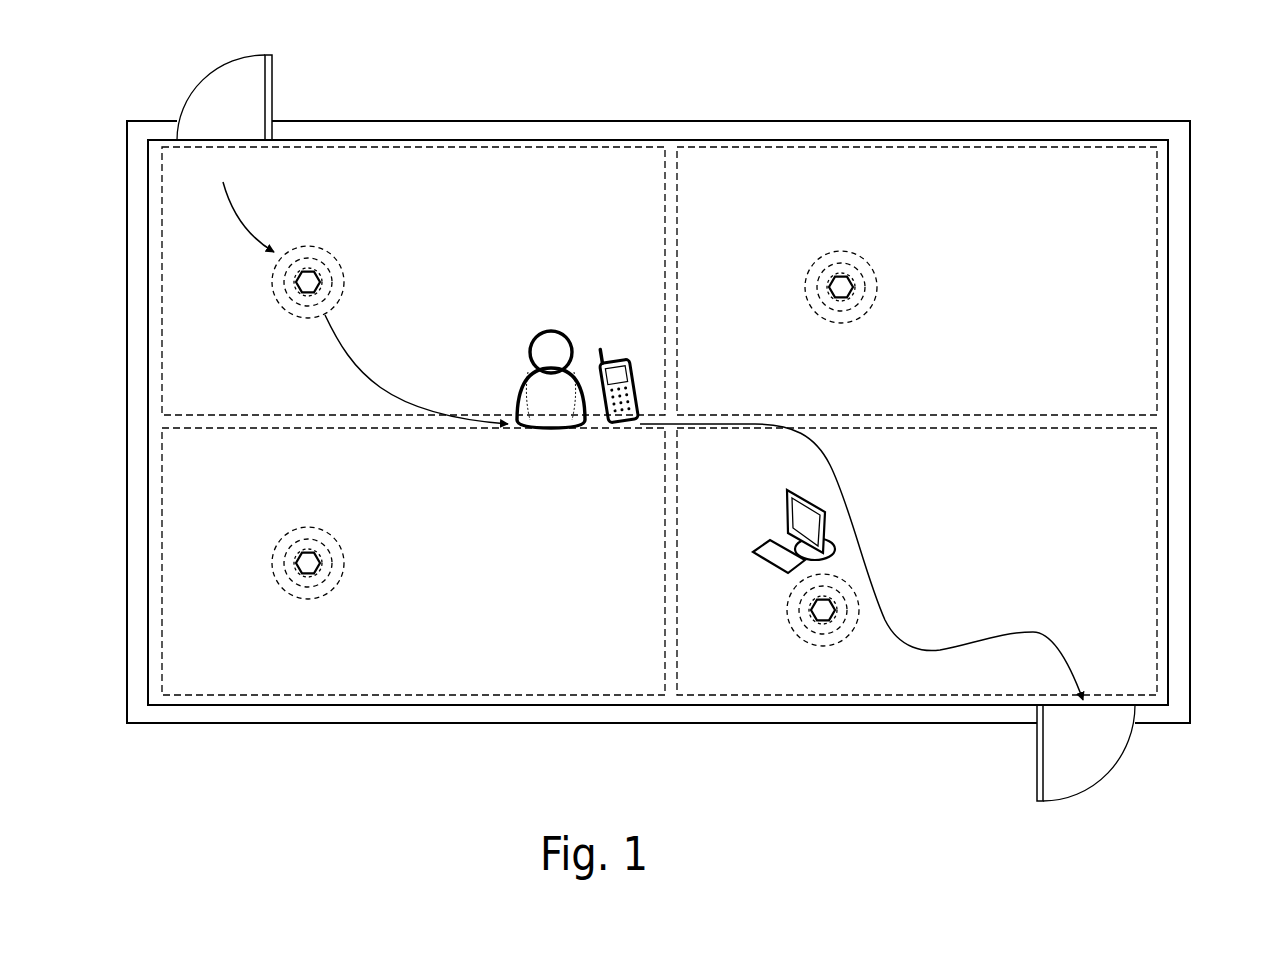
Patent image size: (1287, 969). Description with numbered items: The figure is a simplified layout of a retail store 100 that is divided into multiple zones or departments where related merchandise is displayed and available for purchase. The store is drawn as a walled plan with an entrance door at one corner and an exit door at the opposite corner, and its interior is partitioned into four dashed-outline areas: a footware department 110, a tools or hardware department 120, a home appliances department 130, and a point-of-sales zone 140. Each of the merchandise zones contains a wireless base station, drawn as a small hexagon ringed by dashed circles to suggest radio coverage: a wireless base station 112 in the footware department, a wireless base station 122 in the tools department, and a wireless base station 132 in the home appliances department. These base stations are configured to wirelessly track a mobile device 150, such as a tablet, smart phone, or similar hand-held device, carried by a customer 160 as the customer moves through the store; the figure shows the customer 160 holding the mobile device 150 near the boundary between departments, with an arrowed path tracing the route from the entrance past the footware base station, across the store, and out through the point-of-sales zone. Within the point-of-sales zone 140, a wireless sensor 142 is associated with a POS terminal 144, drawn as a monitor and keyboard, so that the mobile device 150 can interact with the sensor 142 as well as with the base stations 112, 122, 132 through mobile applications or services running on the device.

The retail store 100 is at (1178, 70).
The footware department 110 is at (413, 281).
The wireless base station 112 is at (312, 269).
The tools or hardware department 120 is at (917, 281).
The wireless base station 122 is at (846, 274).
The home appliances department 130 is at (413, 561).
The wireless base station 132 is at (312, 551).
The point-of-sales zone 140 is at (917, 561).
The wireless sensor 142 is at (822, 621).
The POS terminal 144 is at (764, 577).
The mobile device 150 is at (623, 357).
The customer 160 is at (553, 331).